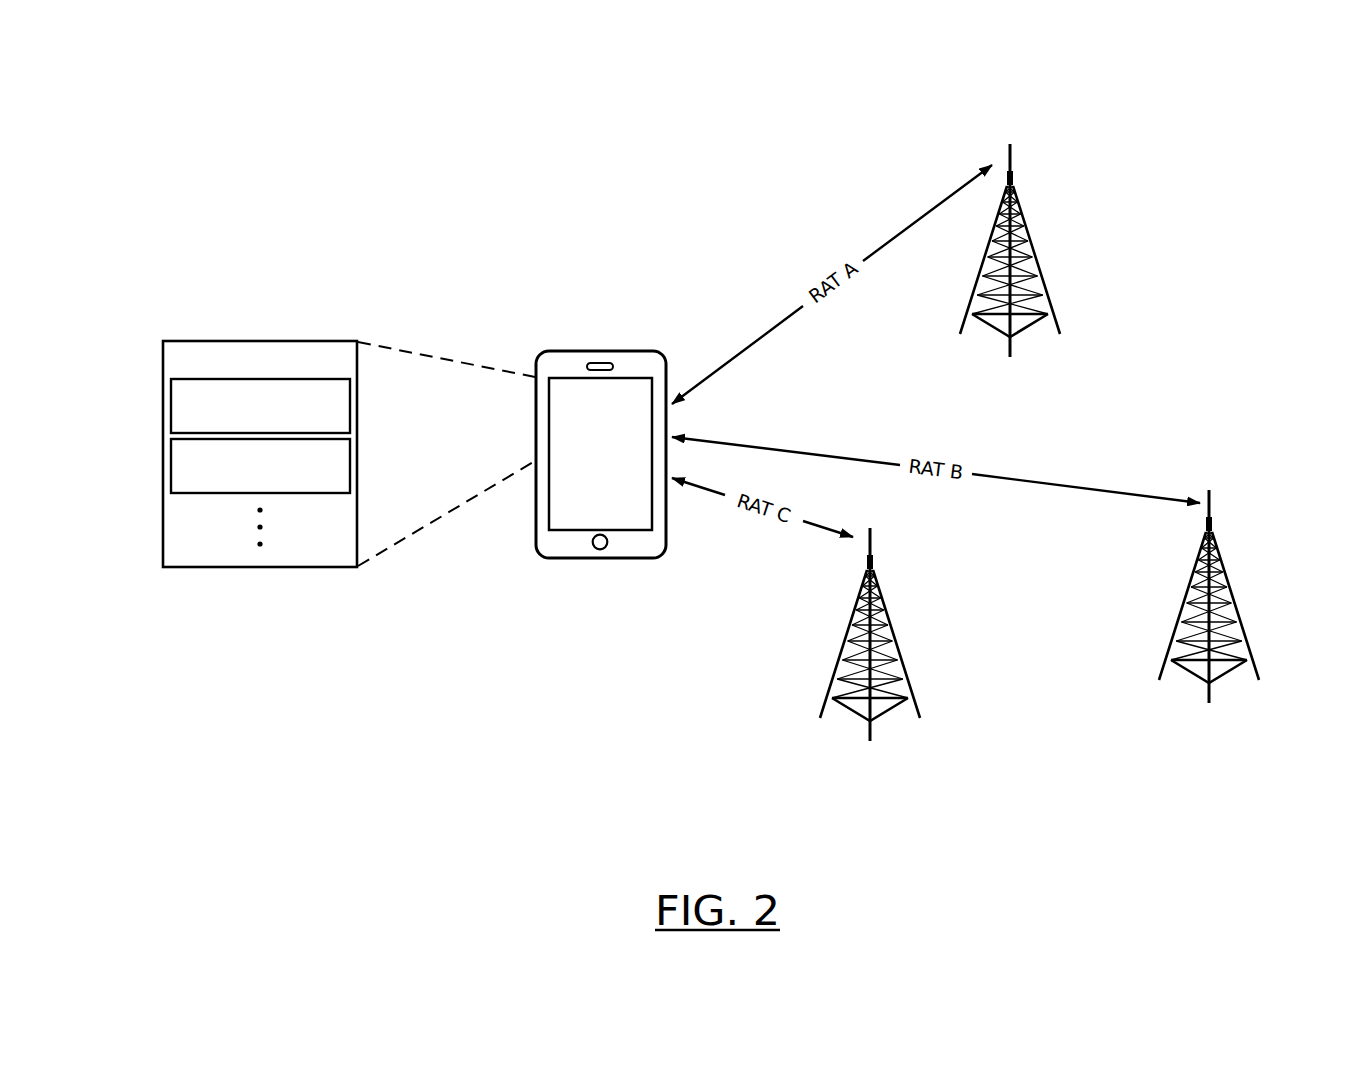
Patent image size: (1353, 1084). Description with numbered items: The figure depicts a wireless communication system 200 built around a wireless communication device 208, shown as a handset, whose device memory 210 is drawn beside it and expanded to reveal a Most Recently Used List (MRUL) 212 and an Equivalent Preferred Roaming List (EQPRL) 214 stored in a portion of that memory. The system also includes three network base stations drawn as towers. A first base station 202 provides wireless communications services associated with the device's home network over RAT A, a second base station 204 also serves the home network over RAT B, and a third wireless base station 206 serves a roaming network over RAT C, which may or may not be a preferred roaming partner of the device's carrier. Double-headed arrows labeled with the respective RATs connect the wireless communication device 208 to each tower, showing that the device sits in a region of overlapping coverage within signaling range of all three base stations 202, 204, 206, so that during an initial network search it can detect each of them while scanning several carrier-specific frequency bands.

The wireless communication system 200 is at (161, 88).
The first base station 202 is at (1035, 280).
The second base station 204 is at (1234, 625).
The third wireless base station 206 is at (894, 664).
The wireless communication device 208 is at (585, 420).
The device memory 210 is at (260, 425).
The Most Recently Used List (MRUL) 212 is at (313, 418).
The Equivalent Preferred Roaming List (EQPRL) 214 is at (319, 478).